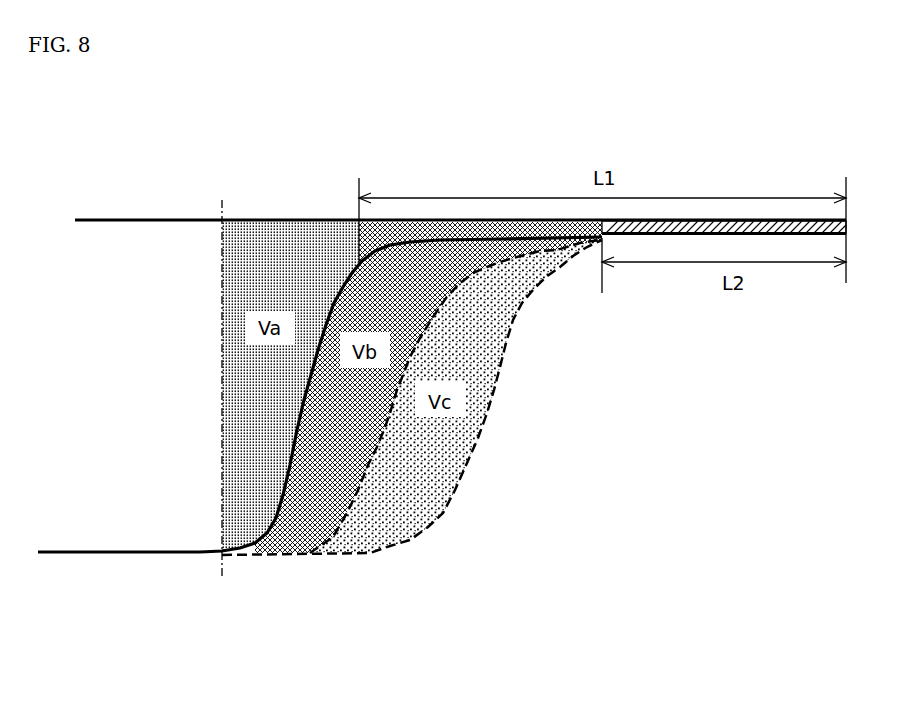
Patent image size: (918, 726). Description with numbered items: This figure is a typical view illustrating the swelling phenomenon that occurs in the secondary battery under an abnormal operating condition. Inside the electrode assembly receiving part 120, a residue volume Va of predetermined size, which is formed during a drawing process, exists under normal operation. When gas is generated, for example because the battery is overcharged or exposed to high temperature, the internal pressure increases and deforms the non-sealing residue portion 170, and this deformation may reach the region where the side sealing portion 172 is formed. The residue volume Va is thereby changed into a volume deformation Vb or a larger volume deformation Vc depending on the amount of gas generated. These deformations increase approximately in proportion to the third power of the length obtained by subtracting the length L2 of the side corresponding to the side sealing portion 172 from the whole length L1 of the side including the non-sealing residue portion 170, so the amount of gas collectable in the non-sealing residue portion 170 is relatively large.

The electrode assembly receiving part 120 is at (150, 538).
The non-sealing residue portion 170 is at (487, 218).
The side sealing portion 172 is at (763, 217).